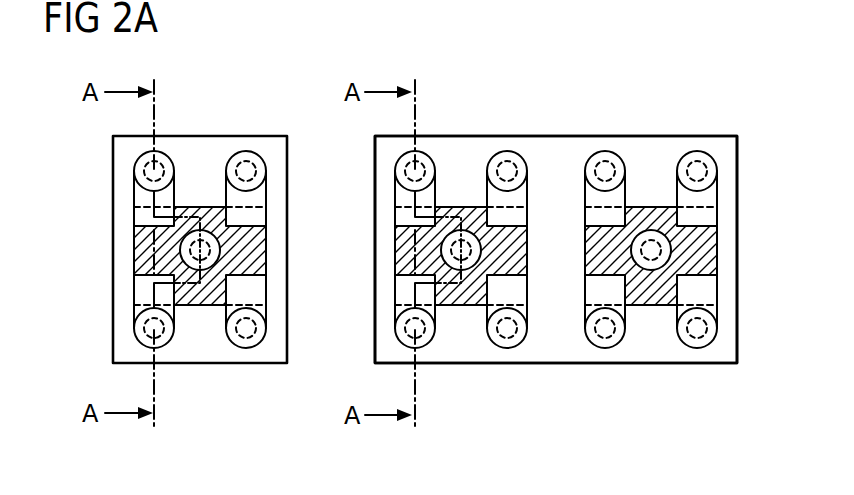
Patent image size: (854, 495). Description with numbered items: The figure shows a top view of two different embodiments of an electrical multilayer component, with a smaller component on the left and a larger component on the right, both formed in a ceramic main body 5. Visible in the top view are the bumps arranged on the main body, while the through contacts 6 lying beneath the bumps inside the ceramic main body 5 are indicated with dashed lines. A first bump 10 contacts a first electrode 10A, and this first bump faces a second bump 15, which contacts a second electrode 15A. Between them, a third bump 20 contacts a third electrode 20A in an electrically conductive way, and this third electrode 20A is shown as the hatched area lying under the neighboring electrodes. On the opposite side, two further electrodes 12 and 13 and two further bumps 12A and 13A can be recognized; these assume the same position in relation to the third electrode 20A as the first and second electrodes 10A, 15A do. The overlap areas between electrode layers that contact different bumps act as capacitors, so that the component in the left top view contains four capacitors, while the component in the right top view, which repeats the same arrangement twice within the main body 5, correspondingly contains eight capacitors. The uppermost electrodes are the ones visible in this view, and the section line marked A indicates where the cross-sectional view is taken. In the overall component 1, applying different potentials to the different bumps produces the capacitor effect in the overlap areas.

The module 1 is at (554, 376).
The main body 5 is at (236, 148).
The through contacts 6 is at (247, 338).
The first bump 10 is at (137, 167).
The first electrode 10A is at (138, 200).
The further electrode 12 is at (262, 168).
The further bump 12A is at (262, 197).
The further electrode 13 is at (262, 331).
The further bump 13A is at (262, 305).
The second bump 15 is at (137, 334).
The second electrode 15A is at (138, 308).
The third bump 20 is at (214, 207).
The third electrode 20A is at (140, 250).